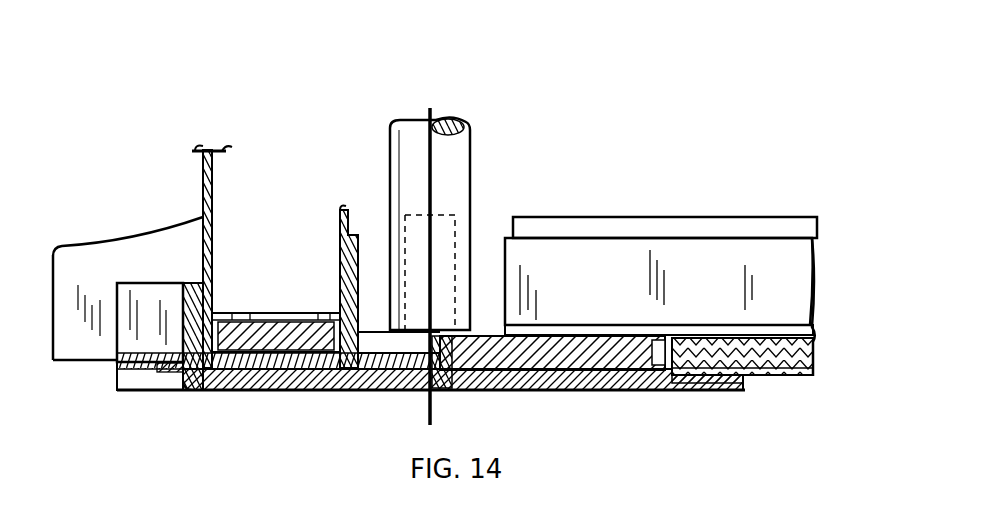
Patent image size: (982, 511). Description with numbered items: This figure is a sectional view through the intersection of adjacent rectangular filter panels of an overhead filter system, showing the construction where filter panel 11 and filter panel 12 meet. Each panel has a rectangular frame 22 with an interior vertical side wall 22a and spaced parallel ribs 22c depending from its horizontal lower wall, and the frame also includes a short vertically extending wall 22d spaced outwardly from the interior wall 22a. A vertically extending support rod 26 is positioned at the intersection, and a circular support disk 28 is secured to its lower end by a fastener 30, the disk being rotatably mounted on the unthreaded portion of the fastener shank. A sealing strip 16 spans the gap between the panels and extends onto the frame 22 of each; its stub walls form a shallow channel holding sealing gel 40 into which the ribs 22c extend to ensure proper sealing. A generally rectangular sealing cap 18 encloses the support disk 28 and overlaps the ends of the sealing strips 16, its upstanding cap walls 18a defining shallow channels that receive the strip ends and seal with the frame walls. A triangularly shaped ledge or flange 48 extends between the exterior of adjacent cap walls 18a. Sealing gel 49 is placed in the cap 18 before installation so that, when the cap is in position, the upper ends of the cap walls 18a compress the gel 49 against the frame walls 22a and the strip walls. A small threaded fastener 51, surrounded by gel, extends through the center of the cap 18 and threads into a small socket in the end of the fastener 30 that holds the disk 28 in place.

The filter panel 11 is at (120, 258).
The filter panel 12 is at (670, 228).
The sealing strip 16 is at (355, 356).
The sealing cap 18 is at (276, 391).
The cap wall 18a is at (200, 393).
The frame 22 is at (226, 184).
The interior vertical side wall 22a is at (213, 236).
The rib 22c is at (238, 303).
The short vertically extending wall 22d is at (790, 302).
The support rod 26 is at (470, 163).
The support disk 28 is at (585, 372).
The fastener 30 is at (455, 362).
The sealing gel 40 is at (290, 305).
The ledge or flange 48 is at (160, 372).
The sealing gel 49 is at (195, 290).
The threaded fastener 51 is at (429, 398).